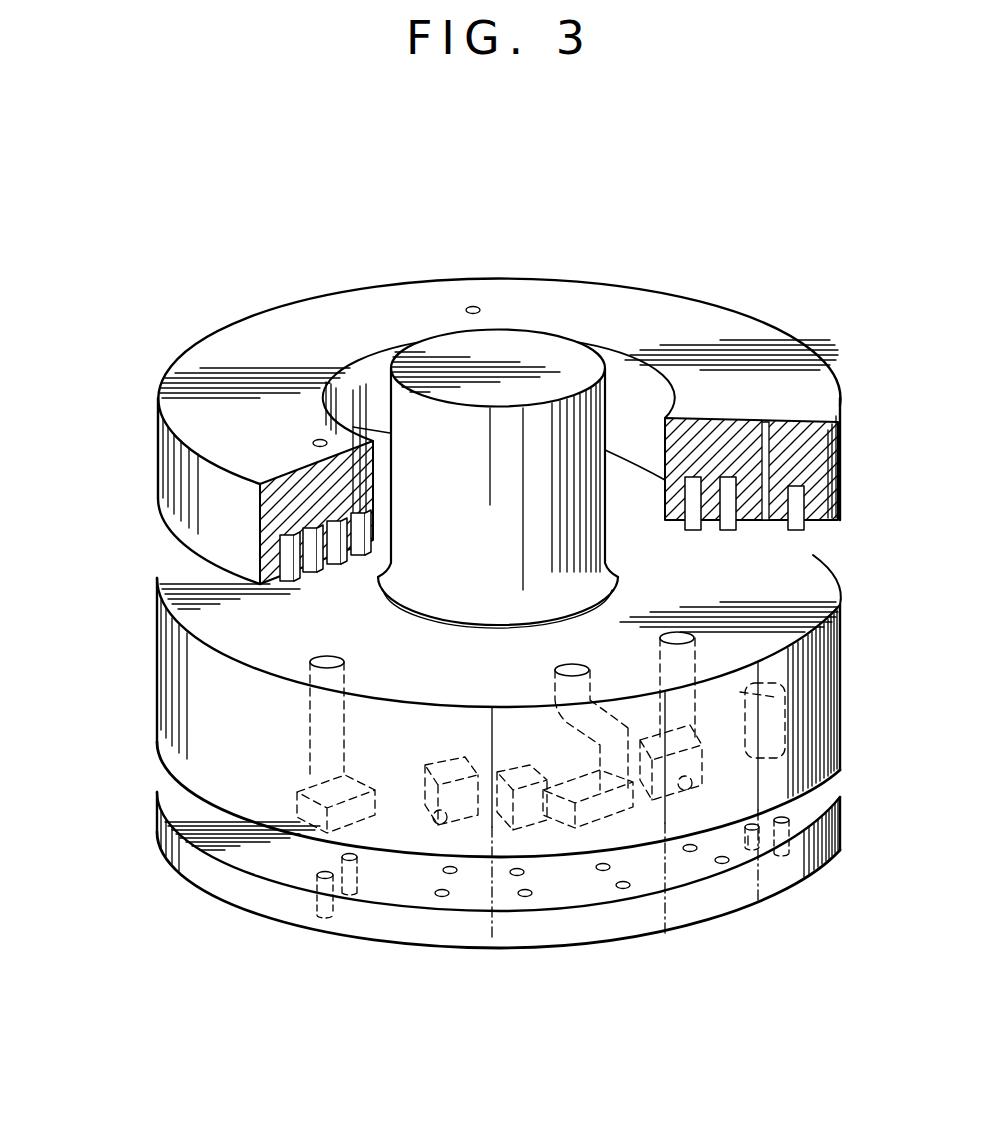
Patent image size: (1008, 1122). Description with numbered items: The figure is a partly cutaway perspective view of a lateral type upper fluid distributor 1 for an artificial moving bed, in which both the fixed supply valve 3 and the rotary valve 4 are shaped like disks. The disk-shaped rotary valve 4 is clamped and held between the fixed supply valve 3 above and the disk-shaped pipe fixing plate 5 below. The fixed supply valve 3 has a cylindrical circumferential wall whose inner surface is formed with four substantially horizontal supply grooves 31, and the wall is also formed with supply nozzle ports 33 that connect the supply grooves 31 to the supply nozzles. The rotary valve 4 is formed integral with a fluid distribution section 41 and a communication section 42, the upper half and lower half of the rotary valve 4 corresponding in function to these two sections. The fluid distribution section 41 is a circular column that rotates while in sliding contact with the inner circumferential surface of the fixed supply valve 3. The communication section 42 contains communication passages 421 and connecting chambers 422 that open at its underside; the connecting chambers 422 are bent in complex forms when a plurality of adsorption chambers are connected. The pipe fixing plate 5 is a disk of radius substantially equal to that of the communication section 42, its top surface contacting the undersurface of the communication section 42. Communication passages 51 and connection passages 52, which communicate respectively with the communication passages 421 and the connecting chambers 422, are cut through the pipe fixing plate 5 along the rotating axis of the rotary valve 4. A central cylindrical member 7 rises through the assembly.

The lateral type upper fluid distributor 1 is at (158, 440).
The fixed supply valve 3 is at (499, 431).
The central cylindrical shaft 7 is at (546, 358).
The supply nozzle ports 33 is at (473, 305).
The supply grooves 31 is at (288, 578).
The rotary valve 4 is at (473, 771).
The fluid distribution section 41 is at (157, 735).
The communication section 42 is at (604, 809).
The communication passages 421 is at (775, 697).
The connecting chambers 422 is at (718, 775).
The pipe fixing plate 5 is at (521, 875).
The communication passages 51 is at (790, 828).
The connection passages 52 is at (748, 836).